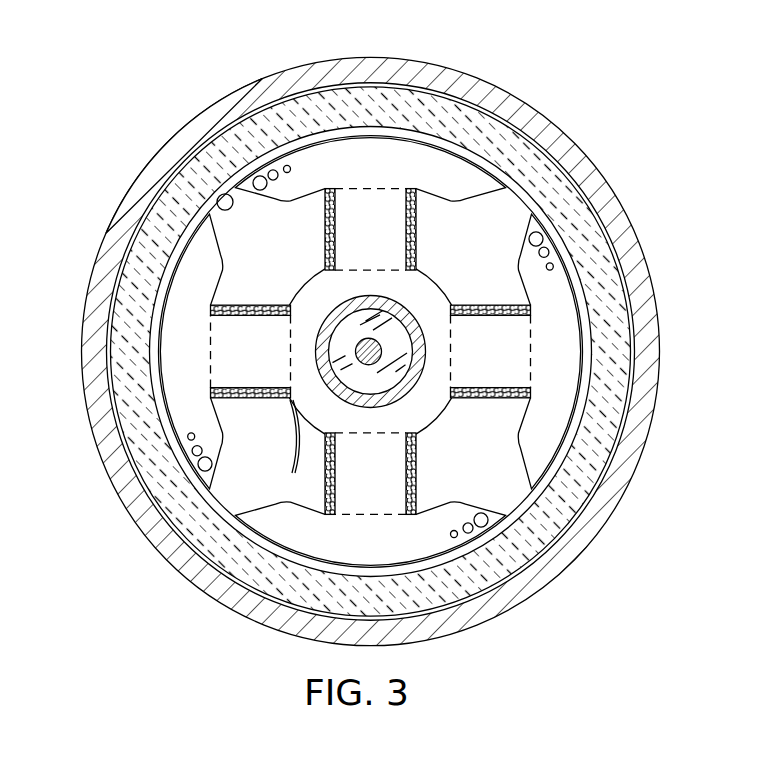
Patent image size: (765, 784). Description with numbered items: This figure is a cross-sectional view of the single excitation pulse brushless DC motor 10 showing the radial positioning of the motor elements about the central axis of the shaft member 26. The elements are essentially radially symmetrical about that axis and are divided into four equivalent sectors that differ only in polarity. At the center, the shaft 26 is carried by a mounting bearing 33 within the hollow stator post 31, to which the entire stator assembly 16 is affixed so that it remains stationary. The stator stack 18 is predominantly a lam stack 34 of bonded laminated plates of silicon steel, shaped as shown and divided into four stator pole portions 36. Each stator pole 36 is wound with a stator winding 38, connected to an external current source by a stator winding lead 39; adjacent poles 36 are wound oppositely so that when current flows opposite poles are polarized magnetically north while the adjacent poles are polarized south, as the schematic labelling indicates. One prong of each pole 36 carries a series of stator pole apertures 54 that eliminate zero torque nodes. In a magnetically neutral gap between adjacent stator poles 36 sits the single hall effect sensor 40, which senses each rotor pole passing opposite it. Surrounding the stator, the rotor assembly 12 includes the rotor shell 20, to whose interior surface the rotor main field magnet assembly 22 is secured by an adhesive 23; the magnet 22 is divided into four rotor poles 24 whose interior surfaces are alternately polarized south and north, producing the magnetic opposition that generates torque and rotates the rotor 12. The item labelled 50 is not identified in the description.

The single excitation pulse brushless DC motor 10 is at (528, 57).
The rotor assembly 12 is at (590, 204).
The stator assembly 16 is at (428, 548).
The stator stack 18 is at (177, 385).
The rotor shell 20 is at (565, 138).
The rotor main field magnet assembly 22 is at (525, 569).
The adhesive 23 is at (447, 68).
The rotor poles 24 is at (168, 236).
The shaft member 26 is at (406, 321).
The stator post 31 is at (407, 390).
The mounting bearing 33 is at (378, 345).
The lam stack 34 is at (277, 618).
The stator pole portions 36 is at (203, 291).
The stator winding 38 is at (270, 304).
The stator winding lead 39 is at (287, 427).
The hall effect sensor 40 is at (236, 206).
The magnet ring 50 is at (227, 570).
The stator pole apertures 54 is at (550, 251).